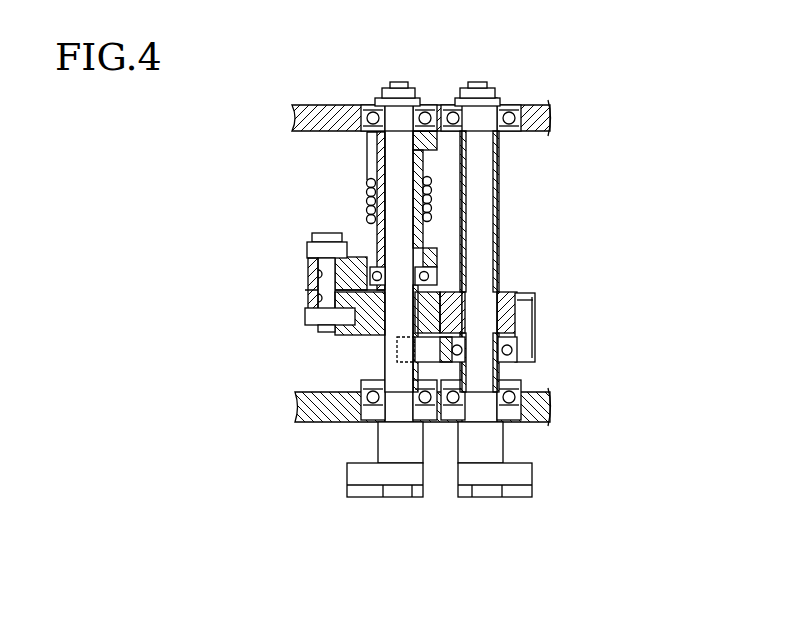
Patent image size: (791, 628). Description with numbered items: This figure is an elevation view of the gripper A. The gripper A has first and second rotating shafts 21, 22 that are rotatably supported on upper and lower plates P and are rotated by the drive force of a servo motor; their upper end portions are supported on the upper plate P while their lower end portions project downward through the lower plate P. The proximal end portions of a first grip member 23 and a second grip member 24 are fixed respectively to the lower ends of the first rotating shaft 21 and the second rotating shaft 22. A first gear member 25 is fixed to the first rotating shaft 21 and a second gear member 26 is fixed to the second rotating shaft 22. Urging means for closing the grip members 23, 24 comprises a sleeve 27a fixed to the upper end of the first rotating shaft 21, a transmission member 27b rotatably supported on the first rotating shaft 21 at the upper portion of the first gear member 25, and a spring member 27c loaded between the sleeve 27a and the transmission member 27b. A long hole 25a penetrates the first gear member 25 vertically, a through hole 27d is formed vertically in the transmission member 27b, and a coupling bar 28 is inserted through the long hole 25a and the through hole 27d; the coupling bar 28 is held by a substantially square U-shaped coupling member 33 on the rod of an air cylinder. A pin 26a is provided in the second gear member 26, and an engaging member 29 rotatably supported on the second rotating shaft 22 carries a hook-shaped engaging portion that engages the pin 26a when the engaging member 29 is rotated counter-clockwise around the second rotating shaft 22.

The first rotating shaft 21 is at (400, 120).
The second rotating shaft 22 is at (477, 123).
The first grip member 23 is at (397, 478).
The second grip member 24 is at (492, 478).
The first gear member 25 is at (367, 325).
The long hole 25a is at (312, 295).
The second gear member 26 is at (512, 292).
The pin 26a is at (523, 312).
The sleeve 27a is at (372, 151).
The transmission member 27b is at (353, 250).
The spring member 27c is at (368, 186).
The through hole 27d is at (317, 282).
The coupling bar 28 is at (328, 265).
The engaging member 29 is at (538, 350).
The coupling member 33 is at (313, 317).
The plate P is at (540, 105).
The gripper A is at (548, 197).